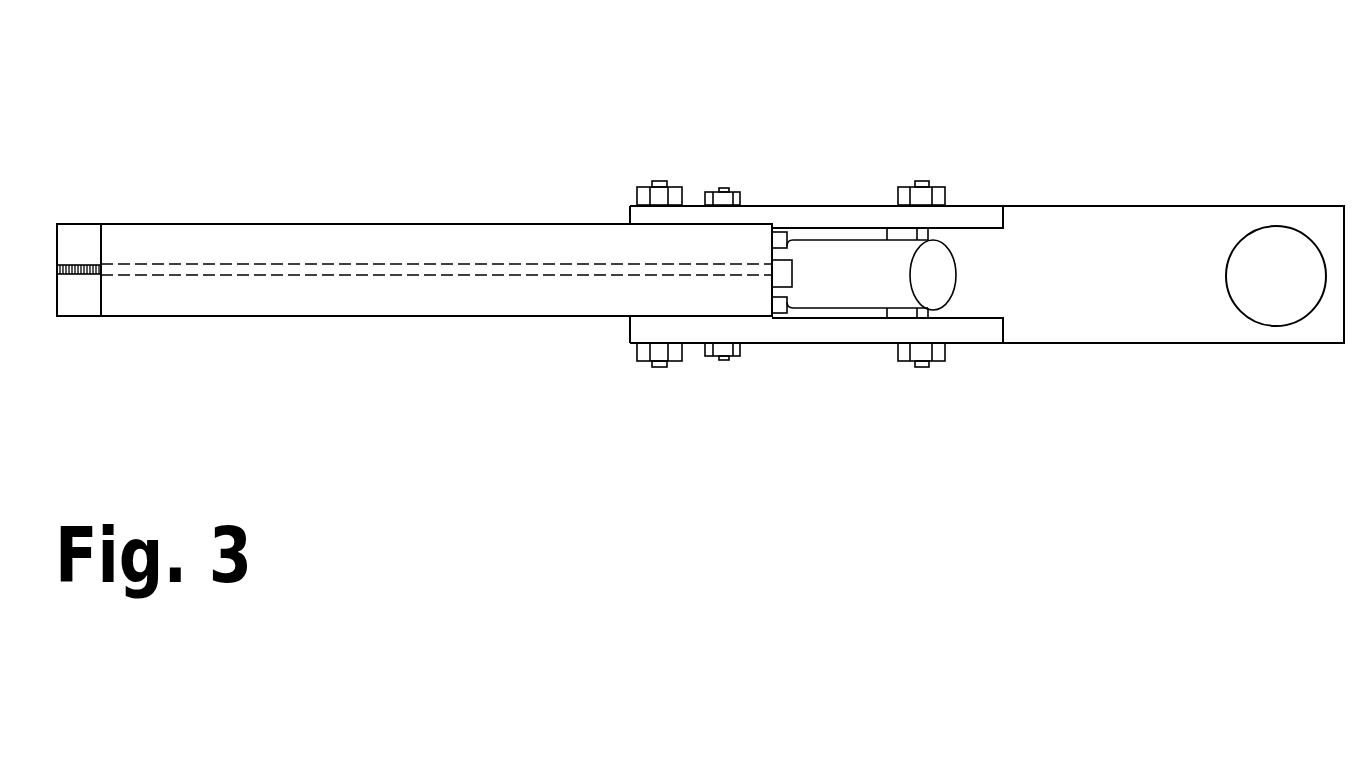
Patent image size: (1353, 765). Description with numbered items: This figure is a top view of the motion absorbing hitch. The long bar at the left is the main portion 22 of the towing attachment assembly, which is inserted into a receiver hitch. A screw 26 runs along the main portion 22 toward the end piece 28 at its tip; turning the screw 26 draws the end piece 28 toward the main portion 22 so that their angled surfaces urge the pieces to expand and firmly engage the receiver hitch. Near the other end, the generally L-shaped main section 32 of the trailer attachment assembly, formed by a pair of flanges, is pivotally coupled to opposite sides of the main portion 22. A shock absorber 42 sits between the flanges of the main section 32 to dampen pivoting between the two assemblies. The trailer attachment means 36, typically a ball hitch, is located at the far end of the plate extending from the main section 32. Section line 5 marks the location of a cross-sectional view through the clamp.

The section line 5- 5 is at (818, 182).
The main portion 22 is at (455, 298).
The screw 26 is at (305, 268).
The end piece 28 is at (77, 245).
The generally L-shaped main section 32 is at (865, 213).
The trailer attachment means 36 is at (1250, 258).
The shock absorber 42 is at (833, 267).